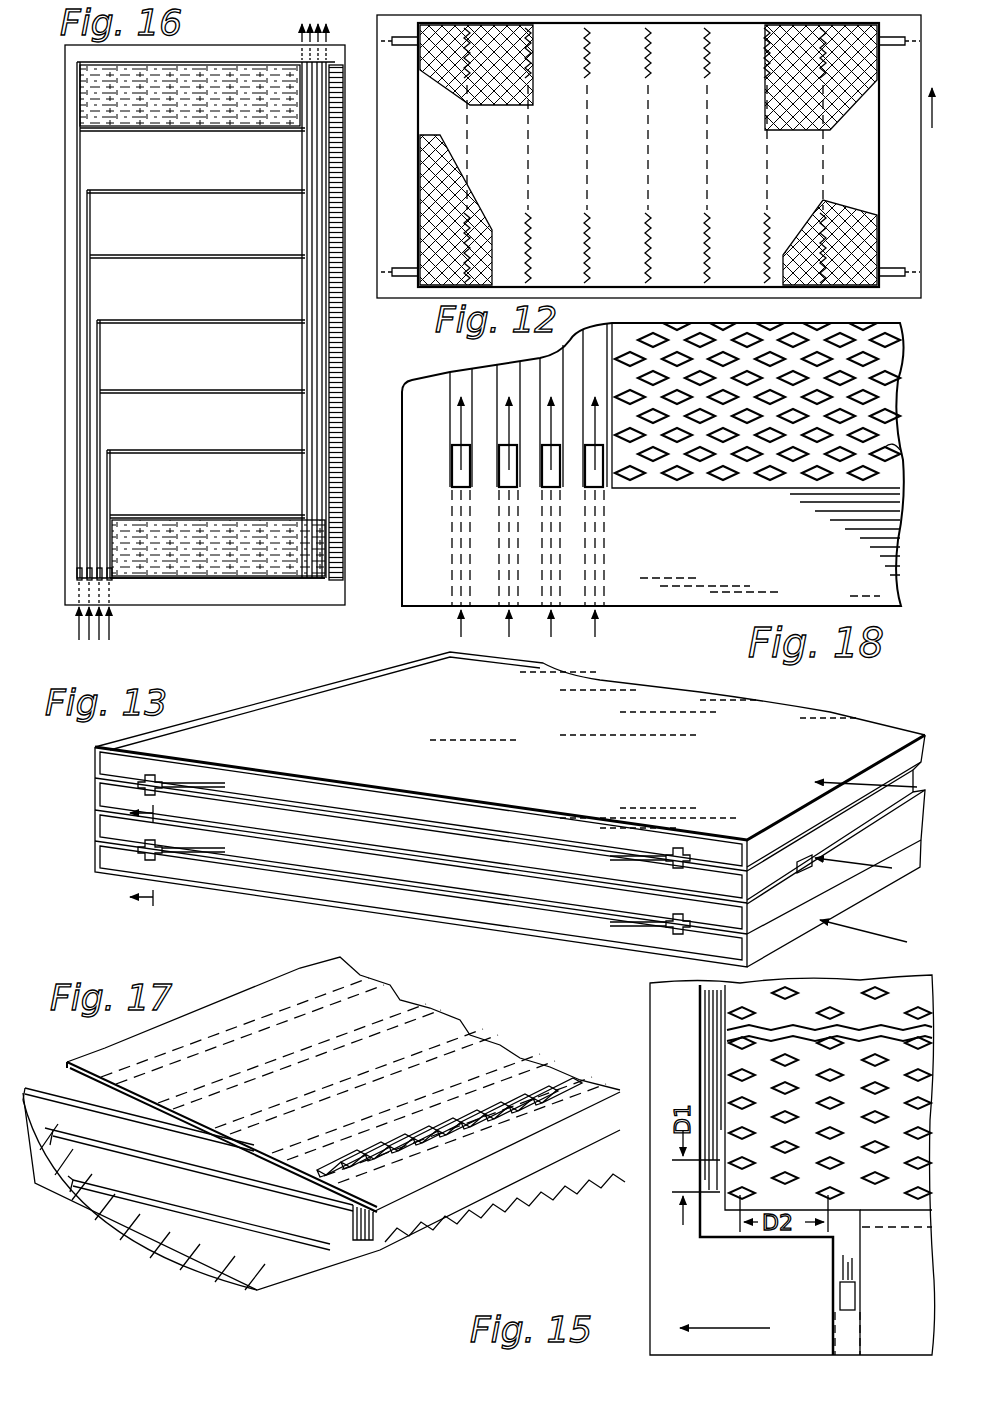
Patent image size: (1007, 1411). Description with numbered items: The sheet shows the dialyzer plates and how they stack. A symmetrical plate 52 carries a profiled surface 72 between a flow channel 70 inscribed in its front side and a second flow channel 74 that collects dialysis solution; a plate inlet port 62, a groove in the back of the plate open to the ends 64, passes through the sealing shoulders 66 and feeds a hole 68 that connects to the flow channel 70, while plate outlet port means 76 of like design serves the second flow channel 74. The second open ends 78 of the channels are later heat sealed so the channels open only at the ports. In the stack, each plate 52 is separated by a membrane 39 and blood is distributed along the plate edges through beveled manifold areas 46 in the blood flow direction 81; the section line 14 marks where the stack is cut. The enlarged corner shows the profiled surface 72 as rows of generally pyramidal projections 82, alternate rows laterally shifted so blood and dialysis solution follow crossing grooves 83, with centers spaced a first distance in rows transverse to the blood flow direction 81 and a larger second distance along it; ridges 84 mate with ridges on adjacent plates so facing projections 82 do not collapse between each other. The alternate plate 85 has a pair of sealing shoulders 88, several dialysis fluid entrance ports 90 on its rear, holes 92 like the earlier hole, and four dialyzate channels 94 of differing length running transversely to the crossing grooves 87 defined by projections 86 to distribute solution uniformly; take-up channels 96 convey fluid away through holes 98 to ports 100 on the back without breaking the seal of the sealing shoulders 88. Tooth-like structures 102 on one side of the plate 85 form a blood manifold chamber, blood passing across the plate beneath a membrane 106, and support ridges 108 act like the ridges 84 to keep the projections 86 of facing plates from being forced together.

In FIG. 13, the section line 14— 14 is at (164, 866).
In FIG. 13, the membrane 39 is at (527, 825).
In FIG. 12, the beveled manifold areas 46 is at (637, 25).
In FIG. 13, the beveled manifold areas 46 is at (807, 865).
In FIG. 12, the plate 52 is at (693, 161).
In FIG. 15, the plate 52 is at (648, 1010).
In FIG. 12, the plate inlet port 62 is at (383, 45).
In FIG. 13, the plate inlet port 62 is at (165, 790).
In FIG. 15, the plate inlet port 62 is at (850, 1357).
In FIG. 12, the ends of plate 64 is at (377, 185).
In FIG. 13, the ends of plate 64 is at (330, 828).
In FIG. 15, the ends of plate 64 is at (730, 1357).
In FIG. 12, the sealing shoulders 66 is at (410, 141).
In FIG. 15, the sealing shoulders 66 is at (770, 1304).
In FIG. 15, the hole 68 is at (853, 1293).
In FIG. 12, the flow channel 70 is at (737, 28).
In FIG. 15, the flow channel 70 is at (700, 1180).
In FIG. 12, the profiled surface 72 is at (793, 70).
In FIG. 12, the second flow channel 74 is at (867, 300).
In FIG. 12, the plate outlet port means 76 is at (920, 273).
In FIG. 12, the second open ends 78 is at (383, 272).
In FIG. 13, the second open ends 78 is at (670, 917).
In FIG. 12, the blood flow direction 81 is at (937, 125).
In FIG. 13, the blood flow direction 81 is at (857, 837).
In FIG. 15, the blood flow direction 81 is at (740, 1332).
In FIG. 15, the projections 82 is at (873, 993).
In FIG. 15, the crossing grooves 83 is at (897, 1160).
In FIG. 12, the ridges 84 is at (590, 250).
In FIG. 13, the ridges 84 is at (878, 945).
In FIG. 15, the ridges 84 is at (893, 1030).
In FIG. 16, the alternate plate embodiment 85 is at (222, 304).
In FIG. 18, the projections 86 is at (890, 385).
In FIG. 18, the crossing grooves 87 is at (887, 447).
In FIG. 16, the sealing shoulders 88 is at (249, 57).
In FIG. 18, the sealing shoulders 88 is at (743, 557).
In FIG. 17, the sealing shoulders 88 is at (343, 1084).
In FIG. 16, the dialysis fluid entrance ports 90 is at (108, 615).
In FIG. 18, the dialysis fluid entrance ports 90 is at (585, 633).
In FIG. 18, the holes 92 is at (453, 470).
In FIG. 16, the dialyzate channels 94 is at (97, 370).
In FIG. 18, the dialyzate channels 94 is at (453, 425).
In FIG. 16, the take-up channels 96 is at (305, 228).
In FIG. 16, the holes 98 is at (330, 67).
In FIG. 16, the ports 100 is at (311, 30).
In FIG. 16, the tooth-like structures 102 is at (342, 543).
In FIG. 17, the tooth-like structures 102 is at (328, 1223).
In FIG. 17, the membrane 106 is at (443, 1097).
In FIG. 16, the support ridges 108 is at (277, 527).